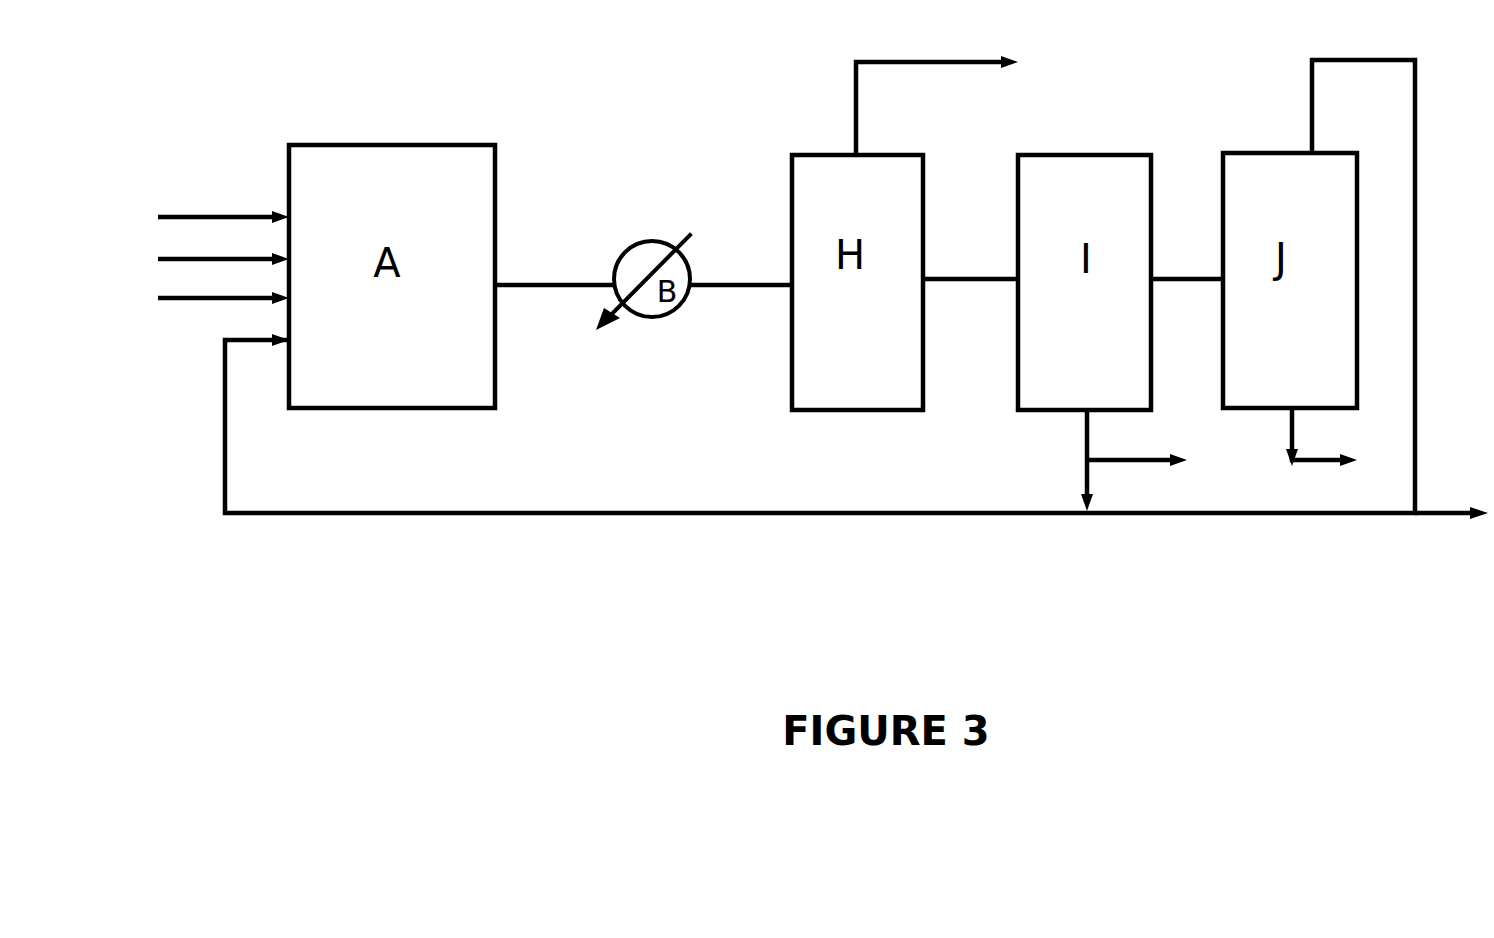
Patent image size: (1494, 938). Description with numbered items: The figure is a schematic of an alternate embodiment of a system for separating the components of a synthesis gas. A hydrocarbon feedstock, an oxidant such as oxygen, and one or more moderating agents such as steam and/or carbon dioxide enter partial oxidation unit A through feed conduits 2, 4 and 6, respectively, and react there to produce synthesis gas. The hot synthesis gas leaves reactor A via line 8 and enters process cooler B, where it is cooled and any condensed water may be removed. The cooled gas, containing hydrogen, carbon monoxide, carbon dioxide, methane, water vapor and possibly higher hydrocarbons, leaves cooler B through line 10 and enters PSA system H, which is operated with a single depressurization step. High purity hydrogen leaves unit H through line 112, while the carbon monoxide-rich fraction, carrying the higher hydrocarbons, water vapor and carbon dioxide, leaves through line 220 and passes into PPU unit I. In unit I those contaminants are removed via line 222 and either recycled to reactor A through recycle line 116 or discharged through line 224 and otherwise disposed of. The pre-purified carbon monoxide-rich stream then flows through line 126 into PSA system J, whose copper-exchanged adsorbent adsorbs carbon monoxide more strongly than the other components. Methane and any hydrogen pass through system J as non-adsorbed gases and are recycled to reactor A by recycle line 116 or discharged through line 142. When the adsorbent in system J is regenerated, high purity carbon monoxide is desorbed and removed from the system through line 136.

The feed conduit 2 is at (207, 200).
The feed conduit 4 is at (208, 258).
The feed conduit 6 is at (216, 298).
The line 8 is at (545, 282).
The line 10 is at (780, 283).
The line 112 is at (854, 98).
The line 220 is at (976, 277).
The line 126 is at (1192, 277).
The line 222 is at (1086, 458).
The line 224 is at (1123, 464).
The line 136 is at (1290, 421).
The line 116 is at (551, 511).
The line 142 is at (1427, 520).